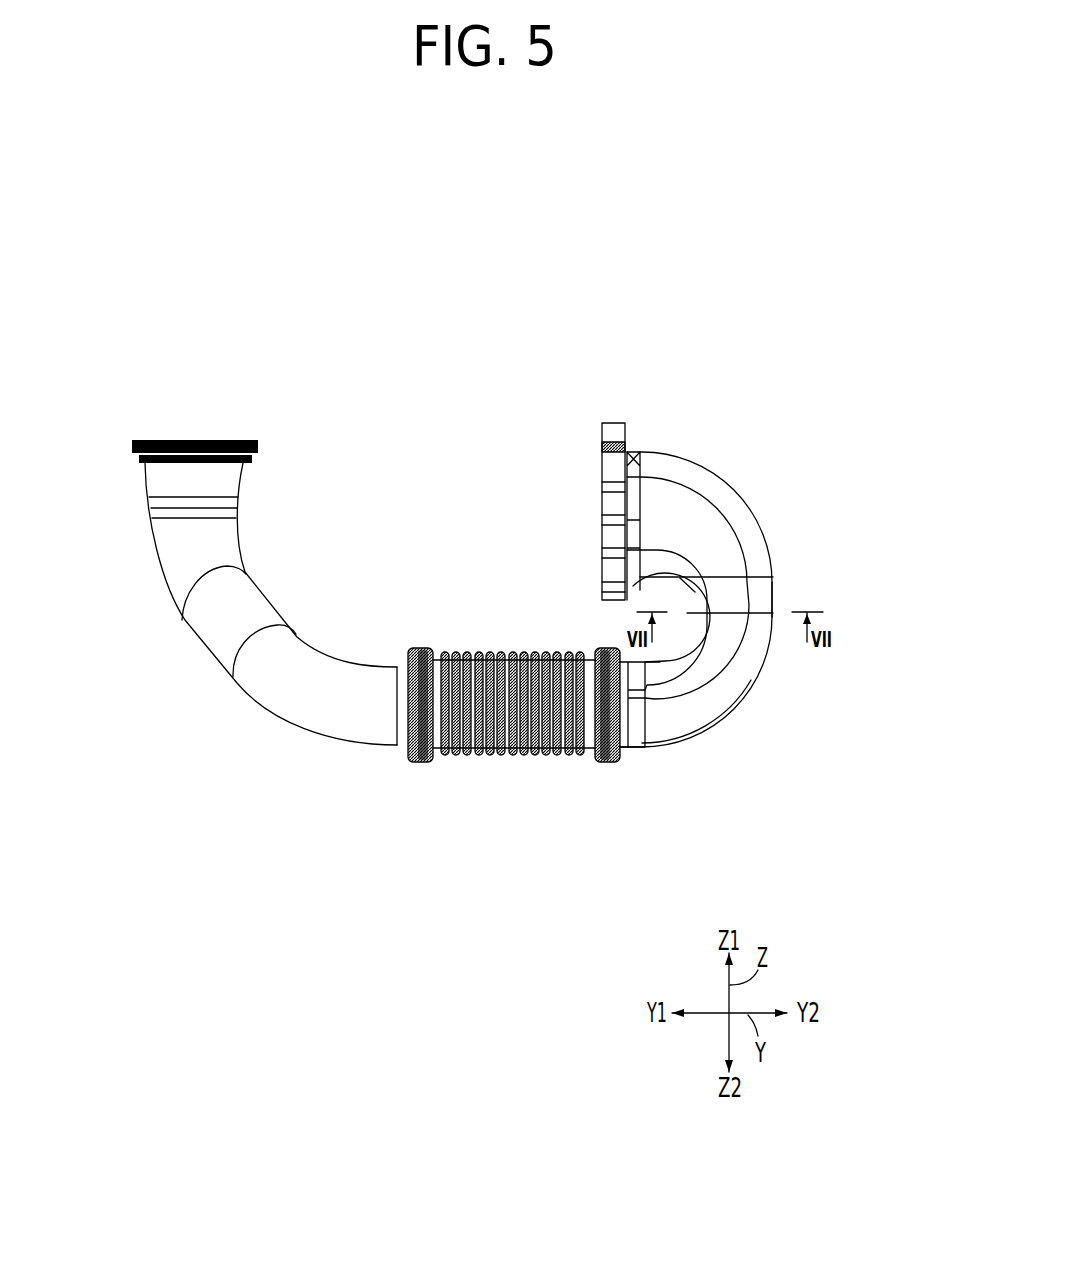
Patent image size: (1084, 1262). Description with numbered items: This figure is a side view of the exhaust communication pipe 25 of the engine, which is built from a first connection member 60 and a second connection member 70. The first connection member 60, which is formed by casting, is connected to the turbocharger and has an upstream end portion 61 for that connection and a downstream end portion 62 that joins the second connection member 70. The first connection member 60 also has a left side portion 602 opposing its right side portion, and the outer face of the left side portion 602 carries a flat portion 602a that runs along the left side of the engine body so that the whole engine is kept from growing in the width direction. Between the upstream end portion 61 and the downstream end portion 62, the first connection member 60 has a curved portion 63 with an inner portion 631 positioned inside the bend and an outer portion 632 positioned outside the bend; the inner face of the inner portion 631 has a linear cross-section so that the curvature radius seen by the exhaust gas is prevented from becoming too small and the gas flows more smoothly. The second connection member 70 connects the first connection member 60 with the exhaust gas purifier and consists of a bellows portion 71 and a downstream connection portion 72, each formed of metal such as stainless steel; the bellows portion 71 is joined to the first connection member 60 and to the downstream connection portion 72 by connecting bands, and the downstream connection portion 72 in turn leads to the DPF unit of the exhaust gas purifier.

The exhaust communication pipe 25 is at (718, 389).
The second connection member 70 is at (605, 823).
The downstream connection portion 72 is at (292, 648).
The bellows portion 71 is at (507, 650).
The first connection member 60 is at (808, 823).
The upstream end portion 61 is at (631, 455).
The left side portion 602 is at (693, 502).
The flat portion 602a is at (720, 546).
The curved portion 63 is at (770, 585).
The outer portion 632 is at (768, 607).
The inner portion 631 is at (688, 580).
The downstream end portion 62 is at (626, 742).